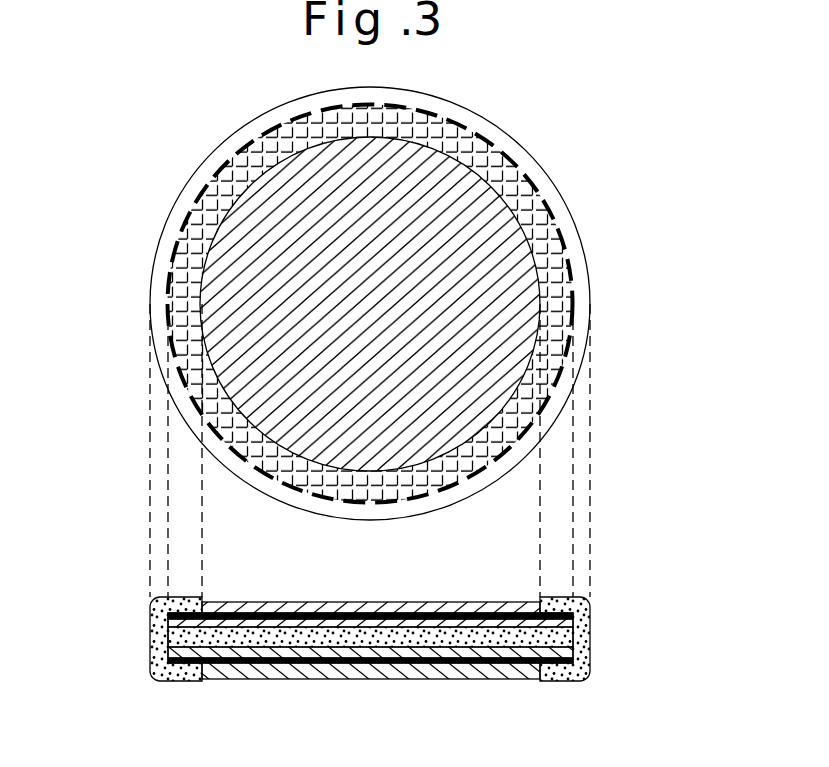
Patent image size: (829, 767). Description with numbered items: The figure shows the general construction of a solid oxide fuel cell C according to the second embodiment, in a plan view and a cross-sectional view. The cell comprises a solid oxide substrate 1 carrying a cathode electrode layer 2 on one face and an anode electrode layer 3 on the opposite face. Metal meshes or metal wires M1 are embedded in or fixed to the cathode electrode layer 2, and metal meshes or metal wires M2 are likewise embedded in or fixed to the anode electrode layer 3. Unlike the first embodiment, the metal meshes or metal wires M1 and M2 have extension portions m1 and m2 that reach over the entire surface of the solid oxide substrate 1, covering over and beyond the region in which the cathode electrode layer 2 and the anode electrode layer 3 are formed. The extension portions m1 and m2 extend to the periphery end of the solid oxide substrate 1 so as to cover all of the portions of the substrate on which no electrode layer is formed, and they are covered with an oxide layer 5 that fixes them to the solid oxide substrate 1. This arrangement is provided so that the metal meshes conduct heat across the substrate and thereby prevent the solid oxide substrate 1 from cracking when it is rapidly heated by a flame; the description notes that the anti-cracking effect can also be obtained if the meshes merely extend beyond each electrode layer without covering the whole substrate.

The solid oxide fuel cell C is at (536, 149).
The solid oxide substrate 1 is at (565, 252).
The cathode electrode layer 2 is at (232, 278).
The anode electrode layer 3 is at (300, 680).
The oxide layer 5 is at (562, 197).
The extension portion m1 is at (555, 298).
The extension portion m2 is at (577, 661).
The metal mesh or metal wires M1 is at (440, 623).
The metal mesh or metal wires M2 is at (440, 659).